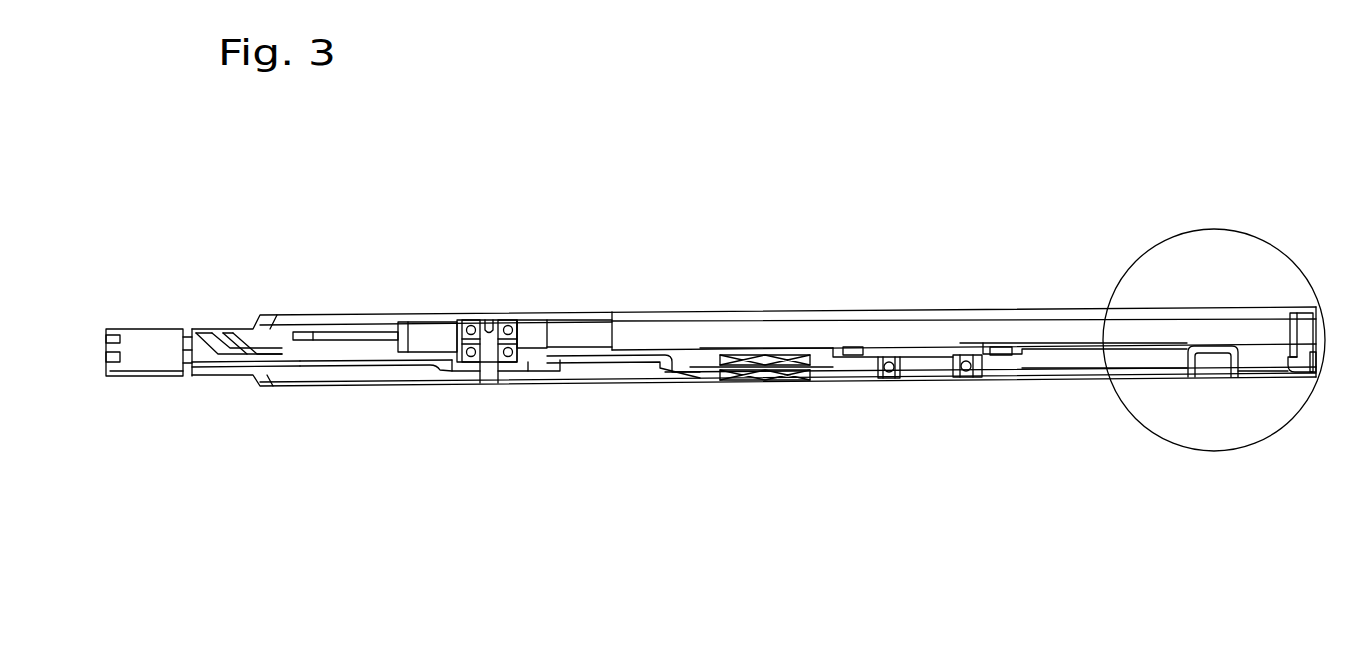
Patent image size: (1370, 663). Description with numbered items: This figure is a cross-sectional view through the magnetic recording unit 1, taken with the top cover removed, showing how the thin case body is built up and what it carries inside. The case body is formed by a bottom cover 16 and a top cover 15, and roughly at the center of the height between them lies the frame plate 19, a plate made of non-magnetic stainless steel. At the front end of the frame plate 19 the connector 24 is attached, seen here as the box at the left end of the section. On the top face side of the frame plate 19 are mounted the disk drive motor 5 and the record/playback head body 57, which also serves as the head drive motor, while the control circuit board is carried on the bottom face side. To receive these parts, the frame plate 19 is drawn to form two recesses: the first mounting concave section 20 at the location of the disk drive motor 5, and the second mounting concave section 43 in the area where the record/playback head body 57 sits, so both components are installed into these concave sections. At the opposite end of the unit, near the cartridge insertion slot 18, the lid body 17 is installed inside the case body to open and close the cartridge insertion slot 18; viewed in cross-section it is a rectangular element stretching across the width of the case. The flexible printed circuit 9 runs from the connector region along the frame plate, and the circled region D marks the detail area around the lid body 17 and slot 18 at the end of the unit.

The magnetic recording unit 1 is at (804, 230).
The connector 24 is at (152, 328).
The flexible printed circuit 9 is at (215, 372).
The top cover 15 is at (375, 313).
The record/playback head body 57 is at (543, 305).
The second mounting concave section 43 is at (465, 384).
The bottom cover 16 is at (365, 387).
The disk drive motor 5 is at (984, 336).
The first mounting concave section 20 is at (1022, 380).
The frame plate 19 is at (1213, 345).
The lid body 17 is at (1303, 330).
The cartridge insertion slot 18 is at (1321, 347).
The detail region D is at (1278, 240).